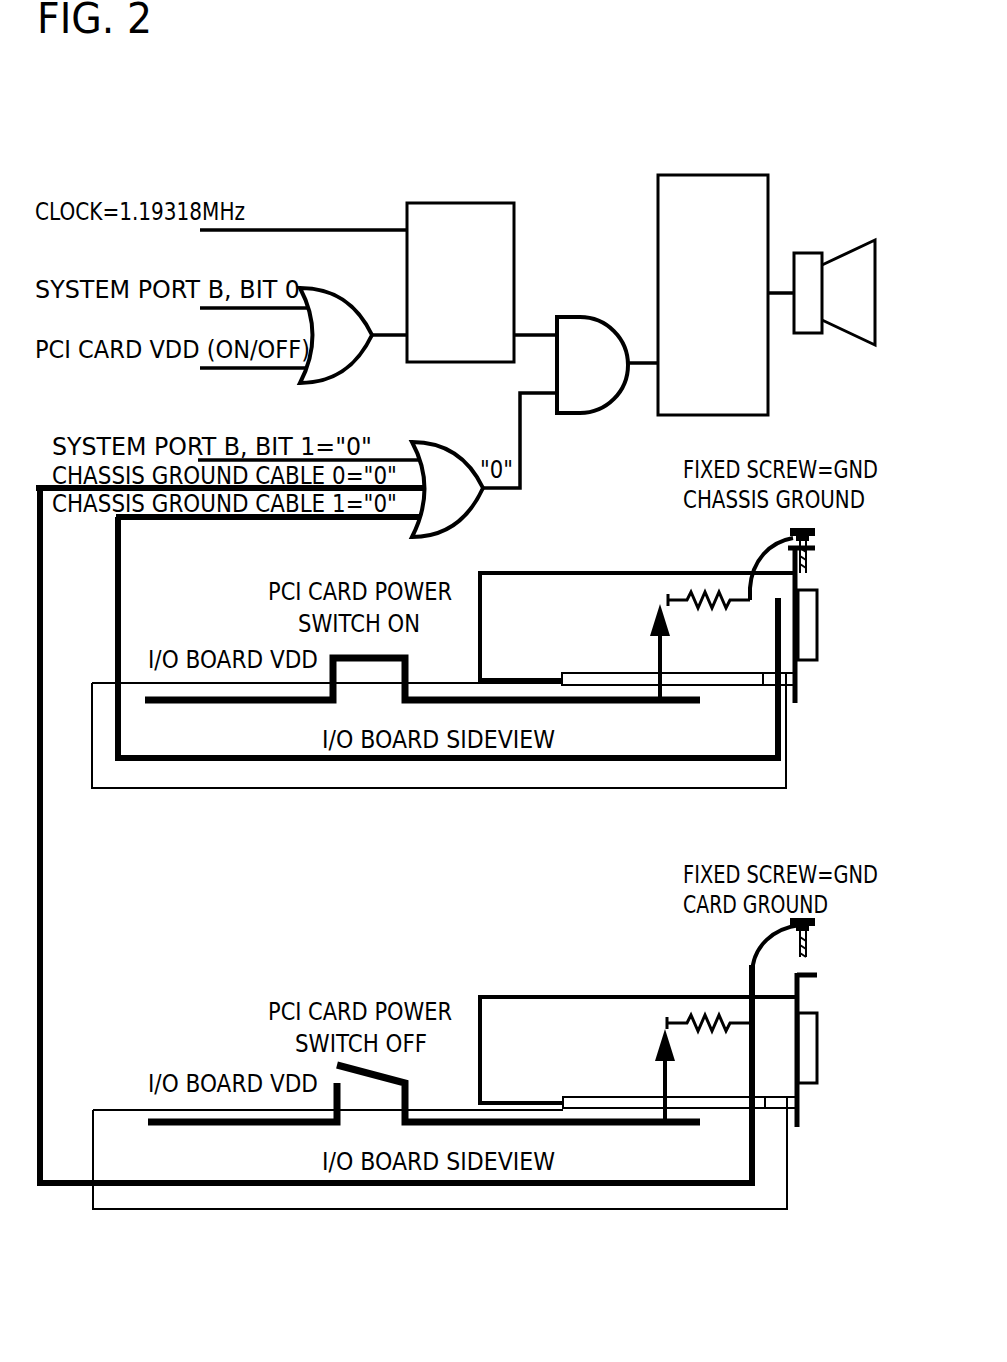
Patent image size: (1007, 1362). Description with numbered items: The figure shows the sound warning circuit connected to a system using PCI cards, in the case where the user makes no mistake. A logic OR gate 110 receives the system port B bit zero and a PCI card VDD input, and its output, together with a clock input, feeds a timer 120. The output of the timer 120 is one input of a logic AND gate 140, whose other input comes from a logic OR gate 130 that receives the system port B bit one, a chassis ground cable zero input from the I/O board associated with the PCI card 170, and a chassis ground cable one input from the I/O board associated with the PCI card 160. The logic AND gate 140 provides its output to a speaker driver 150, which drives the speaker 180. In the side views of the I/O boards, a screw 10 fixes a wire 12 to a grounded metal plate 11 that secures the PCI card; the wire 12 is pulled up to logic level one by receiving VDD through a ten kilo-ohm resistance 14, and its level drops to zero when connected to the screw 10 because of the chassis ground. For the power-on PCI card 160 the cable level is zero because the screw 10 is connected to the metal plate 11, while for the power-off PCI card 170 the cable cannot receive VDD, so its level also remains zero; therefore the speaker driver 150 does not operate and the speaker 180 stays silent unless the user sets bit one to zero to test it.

The logic OR gate 110 is at (341, 296).
The timer 120 is at (462, 203).
The logic OR gate 130 is at (450, 450).
The logic AND gate 140 is at (578, 317).
The speaker driver 150 is at (712, 175).
The speaker 180 is at (808, 253).
The PCI card 160 is at (590, 573).
The PCI card 170 is at (590, 997).
The wire 12 is at (757, 566).
The resistance 14 is at (708, 612).
The screw 10 is at (806, 572).
The grounded metal plate 11 is at (818, 650).